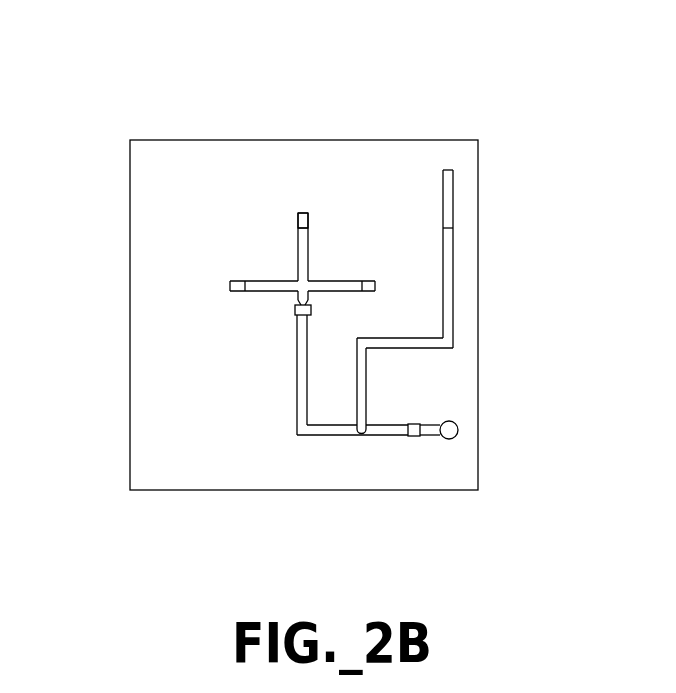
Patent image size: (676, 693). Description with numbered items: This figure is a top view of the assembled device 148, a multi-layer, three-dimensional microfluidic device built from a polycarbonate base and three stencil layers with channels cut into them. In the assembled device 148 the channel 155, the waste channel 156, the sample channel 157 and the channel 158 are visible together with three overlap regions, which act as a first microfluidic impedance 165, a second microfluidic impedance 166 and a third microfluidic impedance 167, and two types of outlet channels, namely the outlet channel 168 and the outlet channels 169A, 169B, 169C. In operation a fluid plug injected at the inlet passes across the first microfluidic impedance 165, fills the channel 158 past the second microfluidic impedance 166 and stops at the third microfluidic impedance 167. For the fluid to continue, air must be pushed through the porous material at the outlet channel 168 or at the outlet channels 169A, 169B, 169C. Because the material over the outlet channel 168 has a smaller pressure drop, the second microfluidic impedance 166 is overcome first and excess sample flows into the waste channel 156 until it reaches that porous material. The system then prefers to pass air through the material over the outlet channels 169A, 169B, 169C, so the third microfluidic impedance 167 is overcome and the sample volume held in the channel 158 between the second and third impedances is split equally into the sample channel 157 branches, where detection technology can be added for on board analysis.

The assembled device 148 is at (366, 63).
The channel 155 is at (431, 436).
The waste channel 156 is at (453, 281).
The sample channel 157 is at (268, 285).
The channel 158 is at (303, 385).
The first microfluidic impedance 165 is at (415, 436).
The second microfluidic impedance 166 is at (360, 430).
The third microfluidic impedance 167 is at (302, 313).
The outlet channel 168 is at (450, 170).
The outlet channel 169A is at (252, 286).
The outlet channel 169B is at (302, 212).
The outlet channel 169C is at (360, 287).